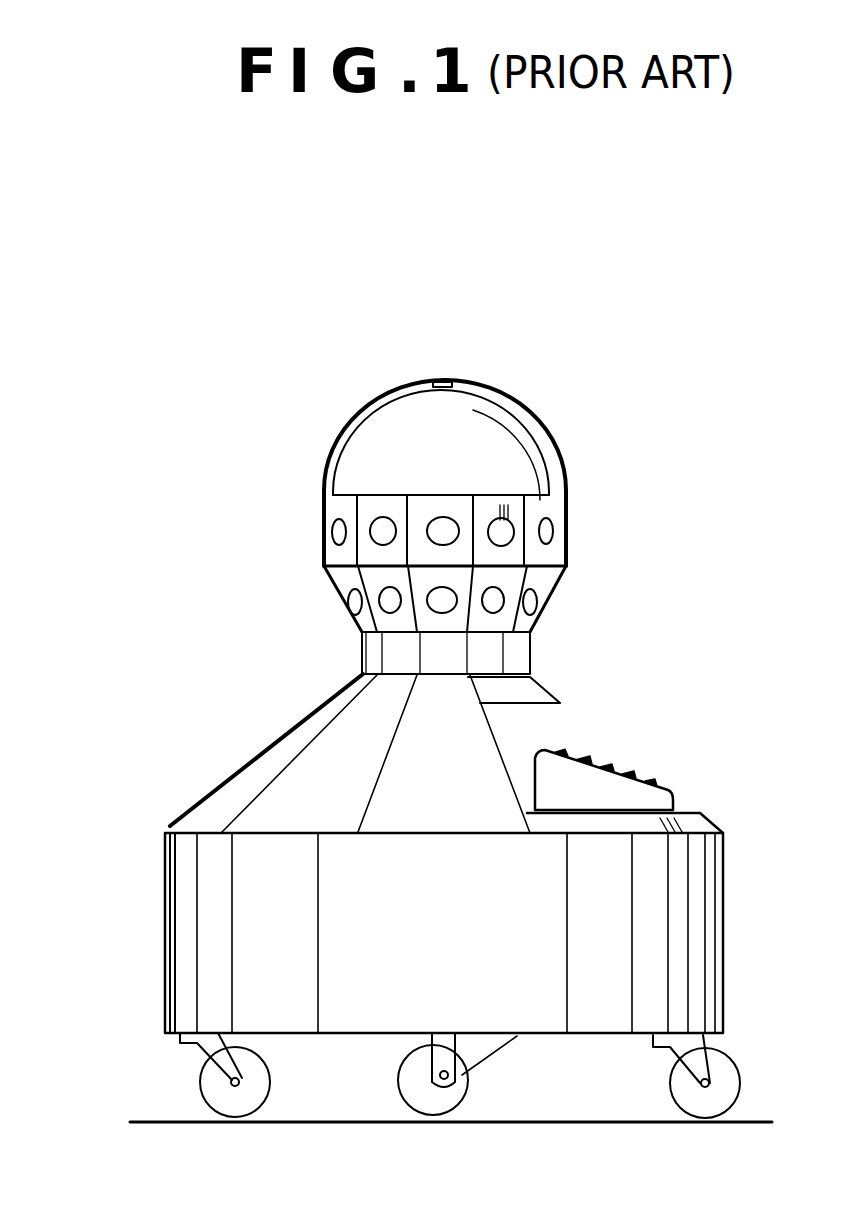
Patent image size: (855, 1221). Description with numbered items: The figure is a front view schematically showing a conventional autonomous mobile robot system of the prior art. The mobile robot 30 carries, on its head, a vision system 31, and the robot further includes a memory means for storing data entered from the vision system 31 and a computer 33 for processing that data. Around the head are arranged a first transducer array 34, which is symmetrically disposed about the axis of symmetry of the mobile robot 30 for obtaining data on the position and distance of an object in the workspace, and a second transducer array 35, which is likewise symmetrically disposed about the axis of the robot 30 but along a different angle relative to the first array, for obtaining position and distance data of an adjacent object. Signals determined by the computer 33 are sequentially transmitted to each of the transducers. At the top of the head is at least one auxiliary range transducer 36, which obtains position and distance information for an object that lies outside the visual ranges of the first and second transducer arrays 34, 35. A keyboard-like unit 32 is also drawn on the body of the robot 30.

The mobile robot 30 is at (213, 750).
The vision system 31 is at (411, 482).
The keyboard 32 is at (563, 748).
The computer 33 is at (675, 792).
The first transducer array 34 is at (567, 525).
The second transducer array 35 is at (552, 602).
The auxiliary range transducer 36 is at (495, 324).